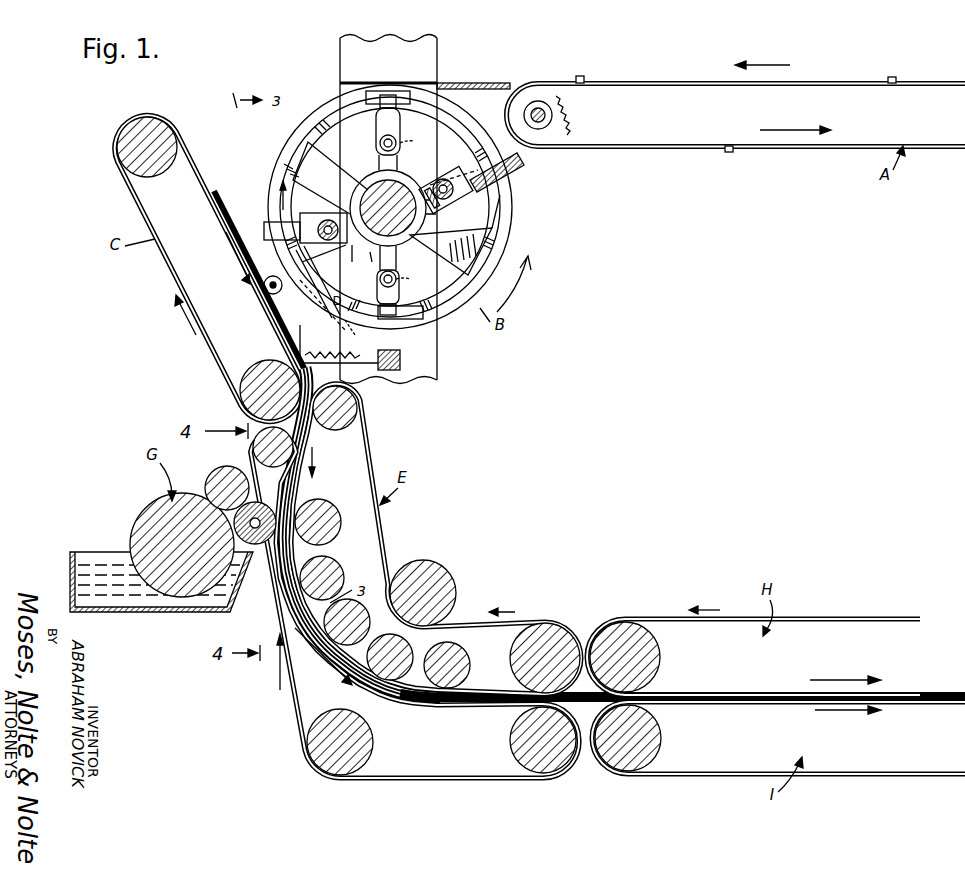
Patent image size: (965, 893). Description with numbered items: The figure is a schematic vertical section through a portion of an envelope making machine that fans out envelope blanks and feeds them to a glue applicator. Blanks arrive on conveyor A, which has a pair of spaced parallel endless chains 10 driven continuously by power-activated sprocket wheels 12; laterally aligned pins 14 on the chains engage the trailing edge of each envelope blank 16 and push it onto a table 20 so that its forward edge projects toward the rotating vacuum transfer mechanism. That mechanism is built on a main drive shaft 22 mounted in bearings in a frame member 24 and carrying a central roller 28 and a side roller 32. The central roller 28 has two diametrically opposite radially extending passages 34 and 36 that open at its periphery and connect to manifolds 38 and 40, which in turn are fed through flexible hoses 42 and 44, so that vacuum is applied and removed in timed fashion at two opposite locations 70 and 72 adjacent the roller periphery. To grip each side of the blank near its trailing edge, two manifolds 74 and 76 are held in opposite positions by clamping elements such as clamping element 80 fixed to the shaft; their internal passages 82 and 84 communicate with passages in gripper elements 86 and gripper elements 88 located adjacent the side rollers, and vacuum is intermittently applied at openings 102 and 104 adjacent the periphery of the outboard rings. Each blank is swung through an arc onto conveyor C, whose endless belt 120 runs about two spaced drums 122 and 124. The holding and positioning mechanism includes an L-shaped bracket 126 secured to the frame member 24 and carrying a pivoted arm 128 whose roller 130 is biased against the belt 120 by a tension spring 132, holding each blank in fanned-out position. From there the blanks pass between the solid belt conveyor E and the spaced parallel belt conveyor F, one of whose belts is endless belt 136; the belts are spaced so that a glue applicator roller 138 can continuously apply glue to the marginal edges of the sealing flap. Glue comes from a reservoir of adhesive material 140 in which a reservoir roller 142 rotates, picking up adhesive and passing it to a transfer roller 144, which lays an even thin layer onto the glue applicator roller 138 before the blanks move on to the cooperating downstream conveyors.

The endless chain 10 is at (598, 86).
The sprocket wheel 12 is at (566, 118).
The pin 14 is at (581, 75).
The envelope blank 16 is at (225, 190).
The table 20 is at (470, 80).
The main drive shaft 22 is at (350, 192).
The frame member 24 is at (437, 371).
The central roller 28 is at (373, 91).
The side roller 32 is at (328, 100).
The radially extending passage 34 is at (376, 132).
The radially extending passage 36 is at (400, 286).
The manifold 38 is at (417, 133).
The manifold 40 is at (411, 263).
The flexible hose 42 is at (391, 267).
The flexible hose 44 is at (380, 144).
The vacuum location 70 is at (398, 82).
The vacuum location 72 is at (400, 361).
The manifold 74 is at (465, 201).
The manifold 76 is at (318, 252).
The clamping element 80 is at (382, 260).
The internal passage 82 is at (438, 180).
The internal passage 84 is at (345, 212).
The gripper element 86 is at (354, 263).
The gripper element 88 is at (455, 178).
The opening 102 is at (264, 228).
The opening 104 is at (505, 166).
The endless belt 120 is at (178, 286).
The drum 122 is at (135, 146).
The drum 124 is at (262, 390).
The L-shaped bracket 126 is at (366, 381).
The pivoted arm 128 is at (262, 277).
The roller 130 is at (283, 282).
The tension spring 132 is at (352, 318).
The endless belt 136 is at (296, 716).
The glue applicator roller 138 is at (300, 490).
The reservoir of adhesive material 140 is at (103, 568).
The reservoir roller 142 is at (148, 507).
The transfer roller 144 is at (236, 466).